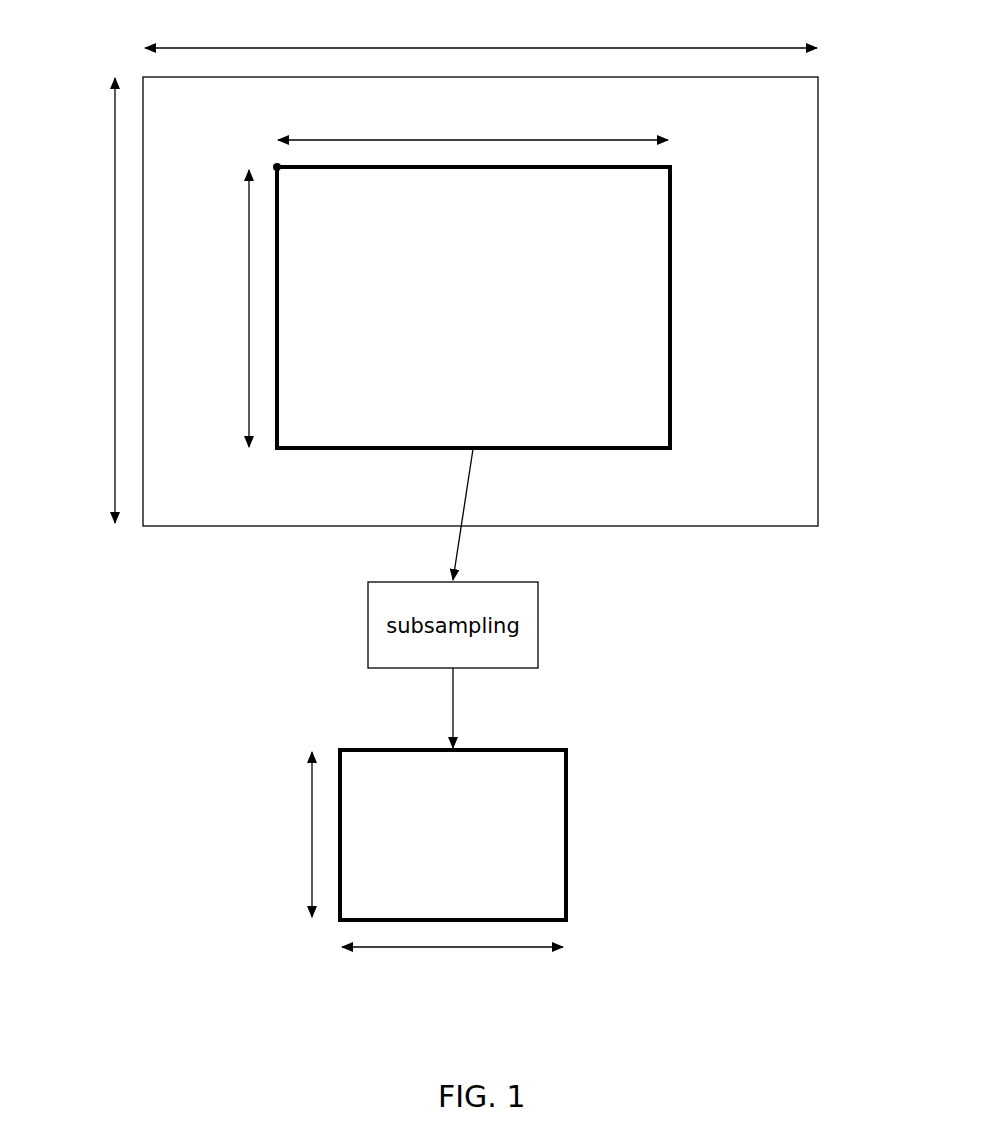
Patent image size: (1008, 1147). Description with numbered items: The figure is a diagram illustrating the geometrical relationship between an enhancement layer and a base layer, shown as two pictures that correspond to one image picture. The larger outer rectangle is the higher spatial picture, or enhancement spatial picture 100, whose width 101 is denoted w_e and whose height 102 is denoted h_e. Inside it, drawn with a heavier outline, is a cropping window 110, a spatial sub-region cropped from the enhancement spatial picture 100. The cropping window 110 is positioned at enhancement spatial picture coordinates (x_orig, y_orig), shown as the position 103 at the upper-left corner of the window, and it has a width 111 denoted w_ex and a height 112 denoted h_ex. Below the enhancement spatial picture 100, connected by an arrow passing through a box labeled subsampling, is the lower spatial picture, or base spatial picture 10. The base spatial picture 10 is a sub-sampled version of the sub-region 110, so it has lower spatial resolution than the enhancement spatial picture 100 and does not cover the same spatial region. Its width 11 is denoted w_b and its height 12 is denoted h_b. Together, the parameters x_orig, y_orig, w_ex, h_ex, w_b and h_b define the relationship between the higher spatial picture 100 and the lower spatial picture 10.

The enhancement spatial picture 100 is at (824, 392).
The width of the enhancement spatial picture 101 is at (557, 45).
The height of the enhancement spatial picture 102 is at (112, 256).
The position of the upper-left corner of the cropping window 103 is at (276, 166).
The cropping window 110 is at (674, 295).
The width of the sub-region 111 is at (552, 139).
The height of the sub-region 112 is at (245, 272).
The base spatial picture 10 is at (570, 855).
The width of the base spatial picture 11 is at (441, 952).
The height of the base spatial picture 12 is at (308, 857).